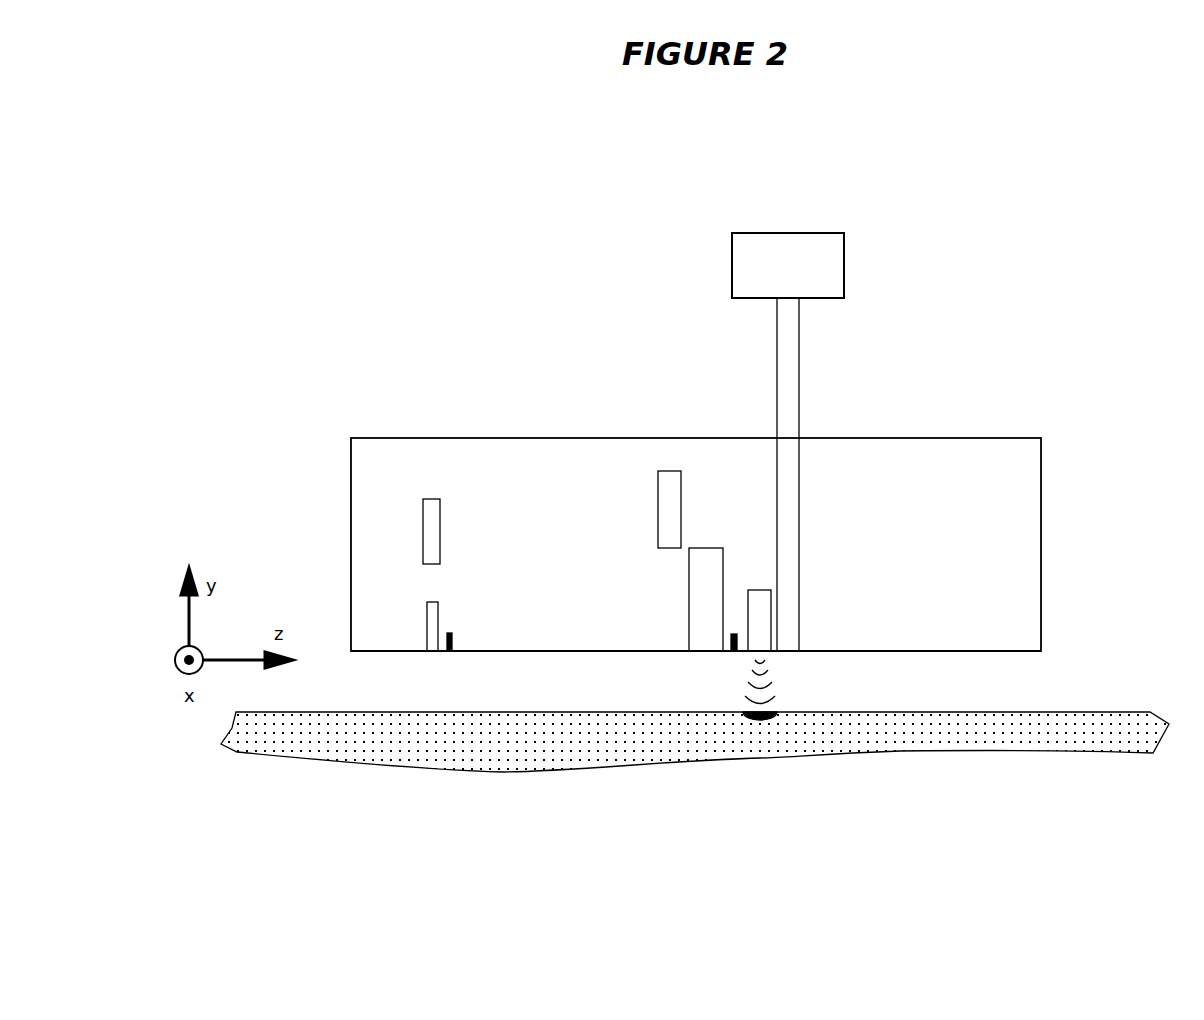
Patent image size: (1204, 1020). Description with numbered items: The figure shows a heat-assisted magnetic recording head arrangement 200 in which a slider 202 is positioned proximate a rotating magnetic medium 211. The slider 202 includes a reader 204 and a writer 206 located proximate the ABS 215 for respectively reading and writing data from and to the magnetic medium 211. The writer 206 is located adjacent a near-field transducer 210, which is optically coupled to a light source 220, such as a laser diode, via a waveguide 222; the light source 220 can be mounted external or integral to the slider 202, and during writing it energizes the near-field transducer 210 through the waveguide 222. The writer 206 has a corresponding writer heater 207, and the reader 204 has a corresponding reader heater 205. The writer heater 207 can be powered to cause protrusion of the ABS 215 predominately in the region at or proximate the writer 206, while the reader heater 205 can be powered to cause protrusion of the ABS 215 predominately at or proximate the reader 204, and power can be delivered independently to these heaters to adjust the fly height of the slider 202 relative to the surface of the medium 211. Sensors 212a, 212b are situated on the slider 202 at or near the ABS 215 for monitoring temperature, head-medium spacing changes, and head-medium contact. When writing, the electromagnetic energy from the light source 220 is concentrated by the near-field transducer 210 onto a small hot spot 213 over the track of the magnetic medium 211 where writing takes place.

The HAMR head arrangement 200 is at (437, 276).
The slider 202 is at (1075, 412).
The reader 204 is at (427, 618).
The reader heater 205 is at (440, 533).
The writer 206 is at (689, 610).
The writer heater 207 is at (658, 518).
The near-field transducer 210 is at (757, 590).
The magnetic medium 211 is at (1100, 712).
The sensor 212a is at (733, 654).
The sensor 212b is at (449, 654).
The hot spot 213 is at (760, 718).
The ABS 215 is at (927, 653).
The light source 220 is at (845, 257).
The waveguide 222 is at (800, 372).